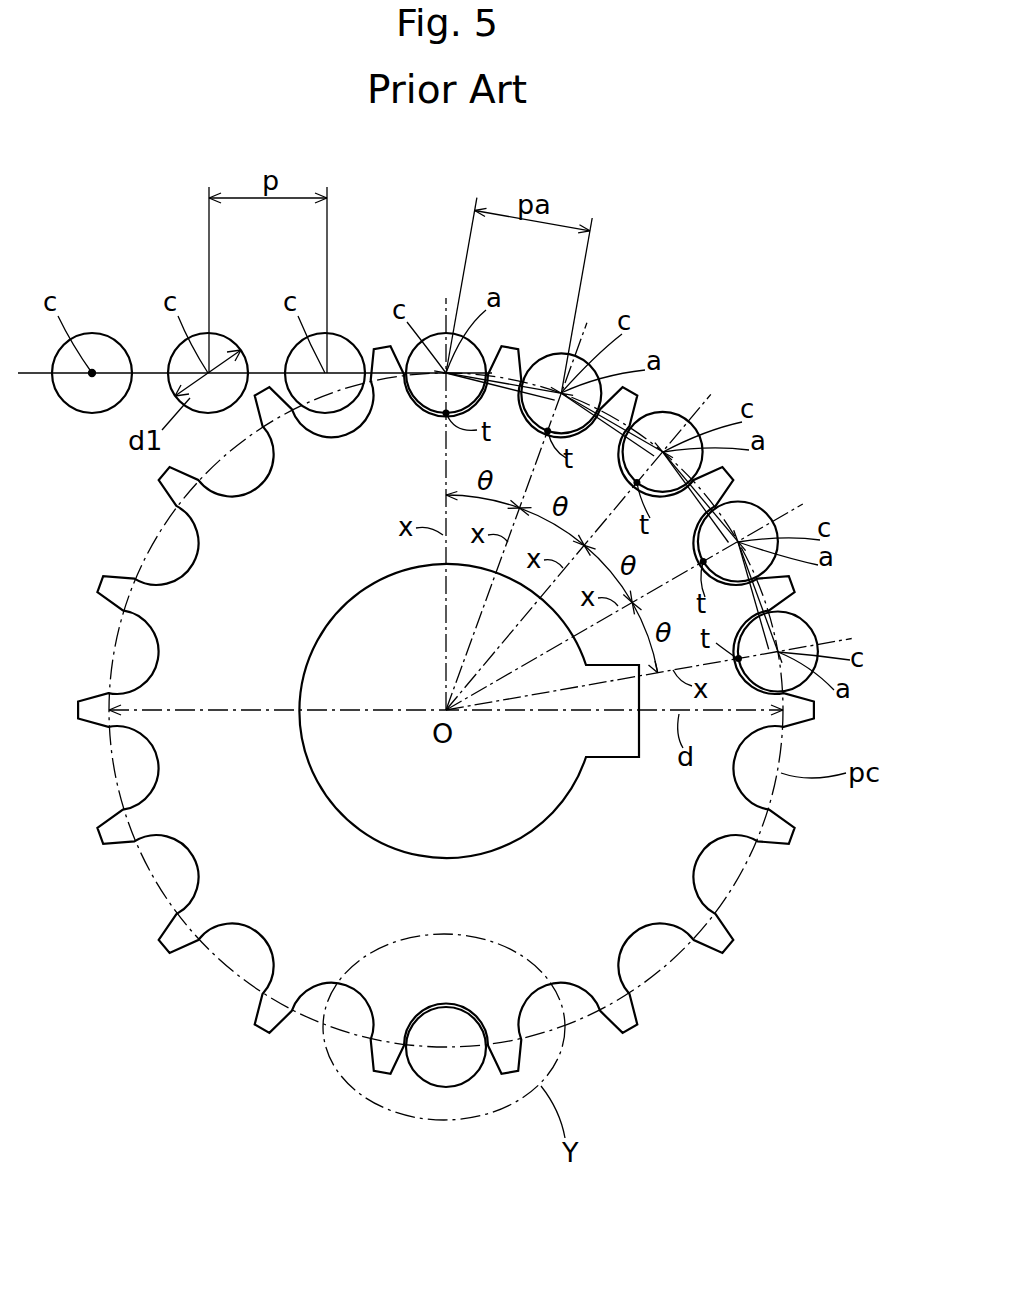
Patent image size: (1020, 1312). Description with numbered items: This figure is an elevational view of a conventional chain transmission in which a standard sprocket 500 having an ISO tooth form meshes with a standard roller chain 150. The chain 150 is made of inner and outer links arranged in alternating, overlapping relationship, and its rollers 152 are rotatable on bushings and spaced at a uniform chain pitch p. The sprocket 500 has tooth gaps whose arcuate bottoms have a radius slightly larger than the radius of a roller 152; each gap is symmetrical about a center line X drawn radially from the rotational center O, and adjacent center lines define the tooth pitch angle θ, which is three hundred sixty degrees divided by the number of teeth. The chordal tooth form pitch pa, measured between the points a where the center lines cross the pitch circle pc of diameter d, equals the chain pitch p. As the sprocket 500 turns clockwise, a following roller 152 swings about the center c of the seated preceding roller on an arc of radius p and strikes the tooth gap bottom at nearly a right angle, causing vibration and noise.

The standard roller chain 150 is at (162, 218).
The roller 152 is at (92, 333).
The standard sprocket 500 is at (212, 819).